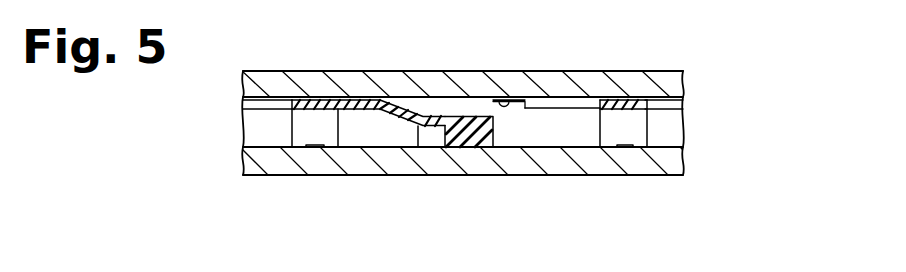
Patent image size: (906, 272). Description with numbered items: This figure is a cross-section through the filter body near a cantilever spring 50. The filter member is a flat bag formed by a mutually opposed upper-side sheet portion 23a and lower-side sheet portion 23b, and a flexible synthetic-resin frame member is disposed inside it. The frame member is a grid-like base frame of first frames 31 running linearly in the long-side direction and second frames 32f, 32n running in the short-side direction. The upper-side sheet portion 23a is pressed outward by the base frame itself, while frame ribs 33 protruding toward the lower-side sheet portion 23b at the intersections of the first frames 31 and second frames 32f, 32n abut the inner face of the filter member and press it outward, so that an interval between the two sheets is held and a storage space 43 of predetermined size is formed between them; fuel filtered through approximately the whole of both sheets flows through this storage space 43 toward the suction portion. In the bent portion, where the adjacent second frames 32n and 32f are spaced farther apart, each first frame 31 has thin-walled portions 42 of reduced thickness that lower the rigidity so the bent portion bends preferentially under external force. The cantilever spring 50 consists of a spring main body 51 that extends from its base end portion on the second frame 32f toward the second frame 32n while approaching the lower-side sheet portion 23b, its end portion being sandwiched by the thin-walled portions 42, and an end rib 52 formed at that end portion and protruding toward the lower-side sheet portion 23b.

The upper-side sheet portion 23a is at (680, 79).
The lower-side sheet portion 23b is at (682, 163).
The first frame 31 is at (554, 107).
The second frame 32f is at (318, 100).
The second frame 32n is at (628, 101).
The frame rib 33 is at (313, 137).
The thin-walled portion 42 is at (508, 100).
The storage space 43 is at (564, 139).
The cantilever spring 50 is at (487, 213).
The spring main body 51 is at (418, 147).
The end rib 52 is at (476, 145).